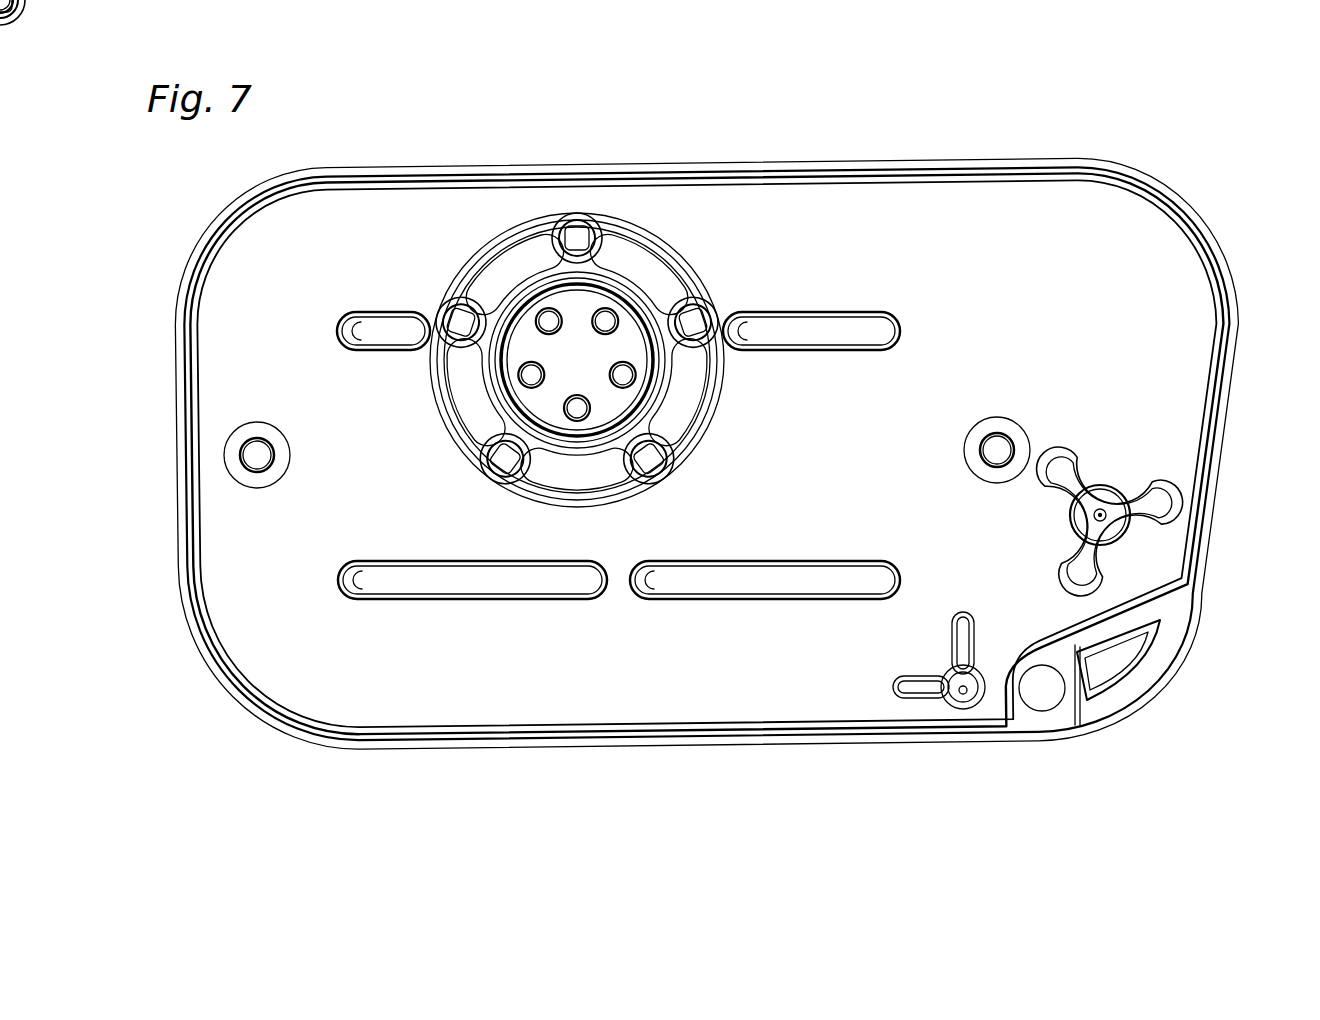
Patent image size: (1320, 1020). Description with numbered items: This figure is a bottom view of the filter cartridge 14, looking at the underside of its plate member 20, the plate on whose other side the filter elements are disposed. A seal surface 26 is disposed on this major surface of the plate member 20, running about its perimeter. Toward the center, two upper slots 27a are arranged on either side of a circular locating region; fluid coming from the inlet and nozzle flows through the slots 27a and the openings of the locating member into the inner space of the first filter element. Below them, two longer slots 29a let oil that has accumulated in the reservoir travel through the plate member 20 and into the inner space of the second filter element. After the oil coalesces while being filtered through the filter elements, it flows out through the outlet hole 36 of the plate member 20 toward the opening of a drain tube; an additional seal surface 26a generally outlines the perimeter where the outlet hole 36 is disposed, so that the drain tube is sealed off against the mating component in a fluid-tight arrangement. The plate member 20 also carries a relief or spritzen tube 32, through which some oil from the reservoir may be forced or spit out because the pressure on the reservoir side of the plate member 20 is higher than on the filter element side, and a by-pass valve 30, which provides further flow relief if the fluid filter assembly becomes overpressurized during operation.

The filter cartridge 14 is at (848, 128).
The plate member 20 is at (735, 160).
The seal surface 26 is at (553, 172).
The additional seal surface 26a is at (1097, 645).
The slots 27a is at (383, 312).
The slots 29a is at (495, 592).
The by-pass valve 30 is at (1133, 540).
The relief or spritzen tube 32 is at (962, 698).
The outlet hole 36 is at (1039, 698).